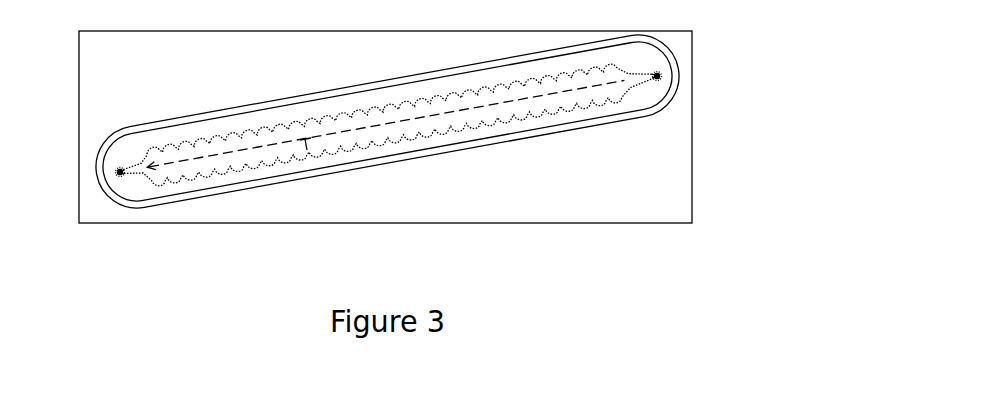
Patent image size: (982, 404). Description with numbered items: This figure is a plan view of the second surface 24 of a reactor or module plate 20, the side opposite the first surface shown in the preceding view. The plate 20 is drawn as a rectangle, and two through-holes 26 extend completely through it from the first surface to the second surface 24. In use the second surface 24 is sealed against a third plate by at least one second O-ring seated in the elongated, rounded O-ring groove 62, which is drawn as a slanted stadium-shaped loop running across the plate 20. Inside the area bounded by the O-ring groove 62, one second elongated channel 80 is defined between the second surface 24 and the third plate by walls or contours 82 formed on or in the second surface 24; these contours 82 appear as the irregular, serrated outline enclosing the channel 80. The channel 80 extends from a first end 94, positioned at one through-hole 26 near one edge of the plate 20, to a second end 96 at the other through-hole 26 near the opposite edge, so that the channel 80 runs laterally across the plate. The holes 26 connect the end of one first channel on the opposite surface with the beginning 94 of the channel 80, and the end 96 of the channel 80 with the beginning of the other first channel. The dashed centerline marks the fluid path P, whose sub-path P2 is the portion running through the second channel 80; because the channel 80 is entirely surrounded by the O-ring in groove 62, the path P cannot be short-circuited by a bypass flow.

The plate 20 is at (608, 224).
The second surface 24 is at (673, 210).
The through-holes 26 is at (115, 164).
The O-ring groove 62 is at (678, 83).
The second elongated channel 80 is at (396, 167).
The walls or contours 82 is at (243, 169).
The first end 94 is at (639, 66).
The second end 96 is at (131, 184).
The path P is at (307, 254).
The sub-path P2 is at (307, 152).